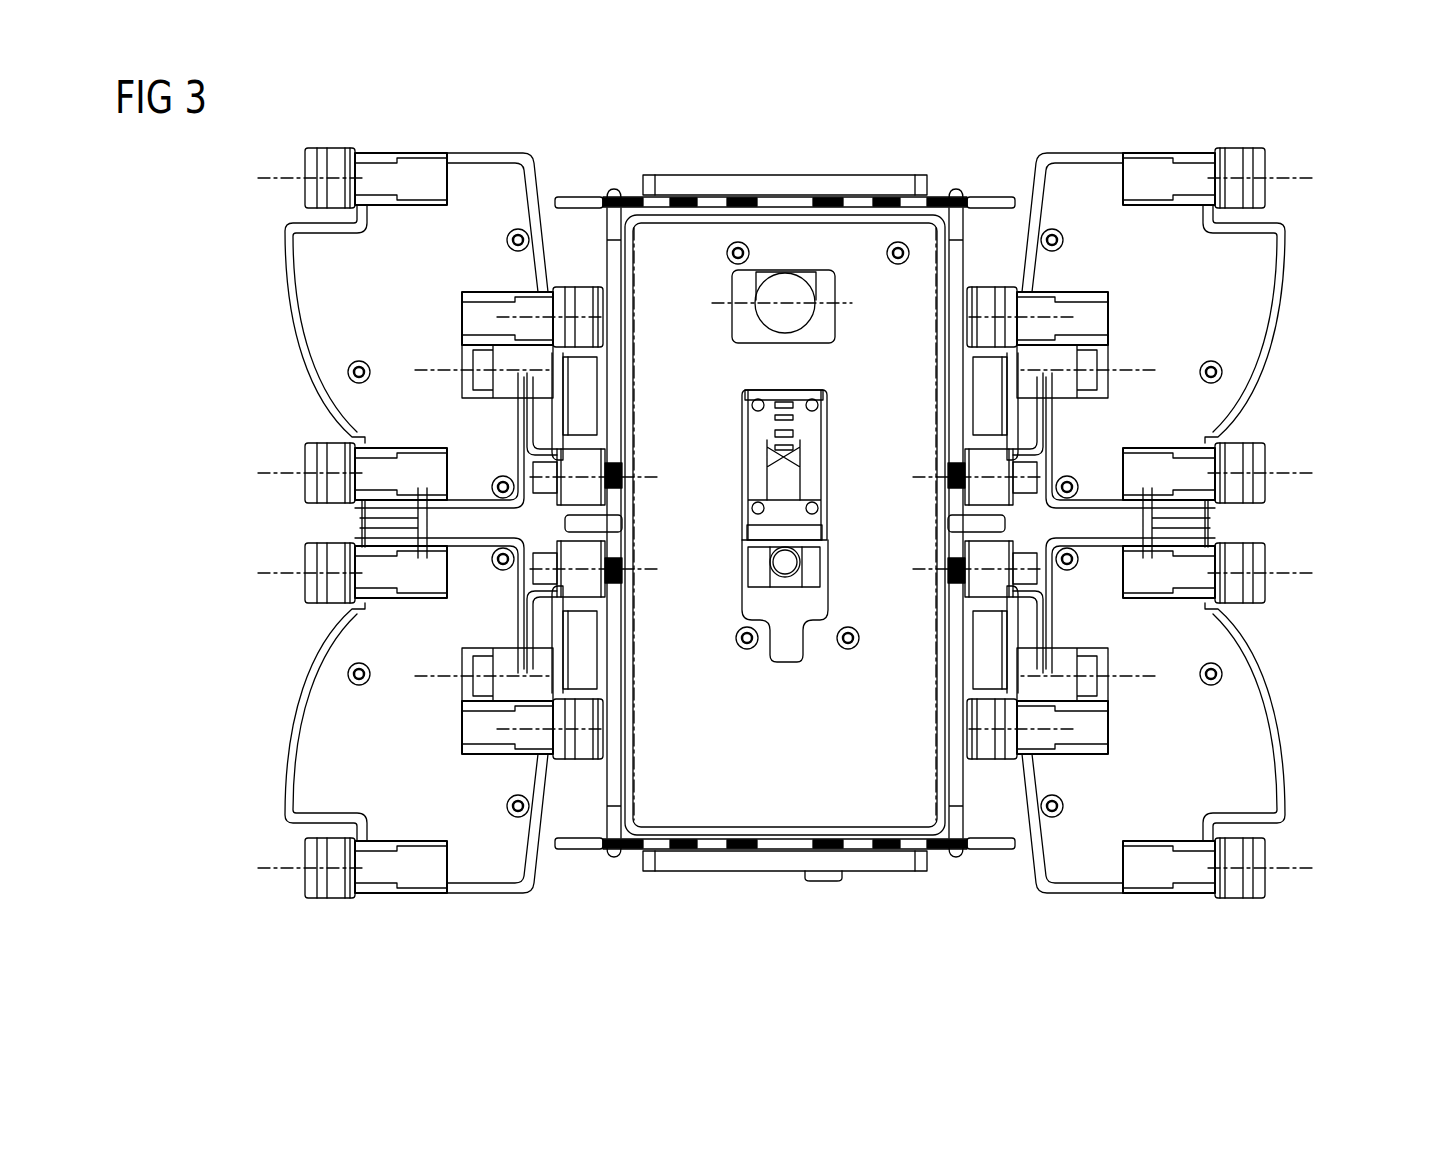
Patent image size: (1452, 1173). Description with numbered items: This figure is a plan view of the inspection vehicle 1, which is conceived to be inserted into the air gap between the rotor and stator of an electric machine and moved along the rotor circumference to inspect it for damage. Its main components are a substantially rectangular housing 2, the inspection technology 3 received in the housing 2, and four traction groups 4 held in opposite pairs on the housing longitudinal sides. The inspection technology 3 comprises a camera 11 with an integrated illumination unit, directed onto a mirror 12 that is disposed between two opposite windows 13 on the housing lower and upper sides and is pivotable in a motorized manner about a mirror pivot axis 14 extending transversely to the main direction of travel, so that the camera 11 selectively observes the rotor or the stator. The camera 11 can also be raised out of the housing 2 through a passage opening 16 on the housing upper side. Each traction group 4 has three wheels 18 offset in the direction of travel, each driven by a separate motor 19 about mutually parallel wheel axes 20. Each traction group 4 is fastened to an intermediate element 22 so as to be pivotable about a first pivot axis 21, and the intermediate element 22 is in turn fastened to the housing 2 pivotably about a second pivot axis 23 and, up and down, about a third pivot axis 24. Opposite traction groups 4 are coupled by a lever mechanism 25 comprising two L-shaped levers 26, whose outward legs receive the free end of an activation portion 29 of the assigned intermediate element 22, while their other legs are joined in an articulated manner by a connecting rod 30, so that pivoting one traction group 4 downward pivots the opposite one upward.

The inspection vehicle 1 is at (1412, 151).
The housing 2 is at (868, 821).
The inspection technology 3 is at (838, 385).
The traction group 4 is at (270, 305).
The camera 11 is at (790, 483).
The mirror 12 is at (783, 283).
The window 13 is at (823, 278).
The mirror pivot axis 14 is at (847, 302).
The passage opening 16 is at (782, 645).
The wheel 18 is at (310, 488).
The motor 19 is at (373, 465).
The wheel axis 20 is at (232, 472).
The first pivot axis 21 is at (428, 370).
The intermediate element 22 is at (578, 412).
The second pivot axis 23 is at (660, 569).
The third pivot axis 24 is at (637, 282).
The lever mechanism 25 is at (703, 165).
The L-shaped lever 26 is at (562, 200).
The activation portion 29 is at (613, 192).
The connecting rod 30 is at (752, 178).